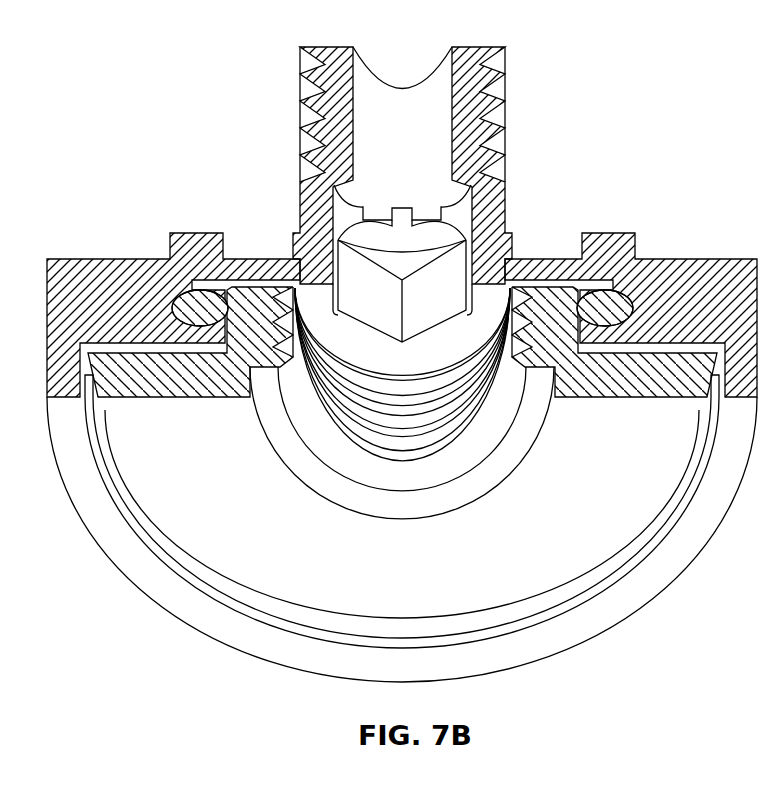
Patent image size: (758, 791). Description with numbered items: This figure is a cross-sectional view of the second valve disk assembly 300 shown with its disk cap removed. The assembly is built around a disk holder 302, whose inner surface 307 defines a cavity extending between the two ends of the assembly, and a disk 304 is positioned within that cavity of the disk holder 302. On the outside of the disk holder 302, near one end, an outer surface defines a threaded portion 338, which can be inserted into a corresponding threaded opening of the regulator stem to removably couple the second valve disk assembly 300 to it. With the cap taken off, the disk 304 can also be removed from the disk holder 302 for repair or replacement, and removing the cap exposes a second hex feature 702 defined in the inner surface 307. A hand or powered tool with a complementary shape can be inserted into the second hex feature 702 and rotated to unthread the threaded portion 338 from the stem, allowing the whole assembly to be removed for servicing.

The second valve disk assembly 300 is at (170, 95).
The disk holder 302 is at (597, 232).
The disk 304 is at (128, 352).
The inner surface 307 is at (323, 120).
The threaded portion 338 is at (505, 118).
The second hex feature 702 is at (332, 262).